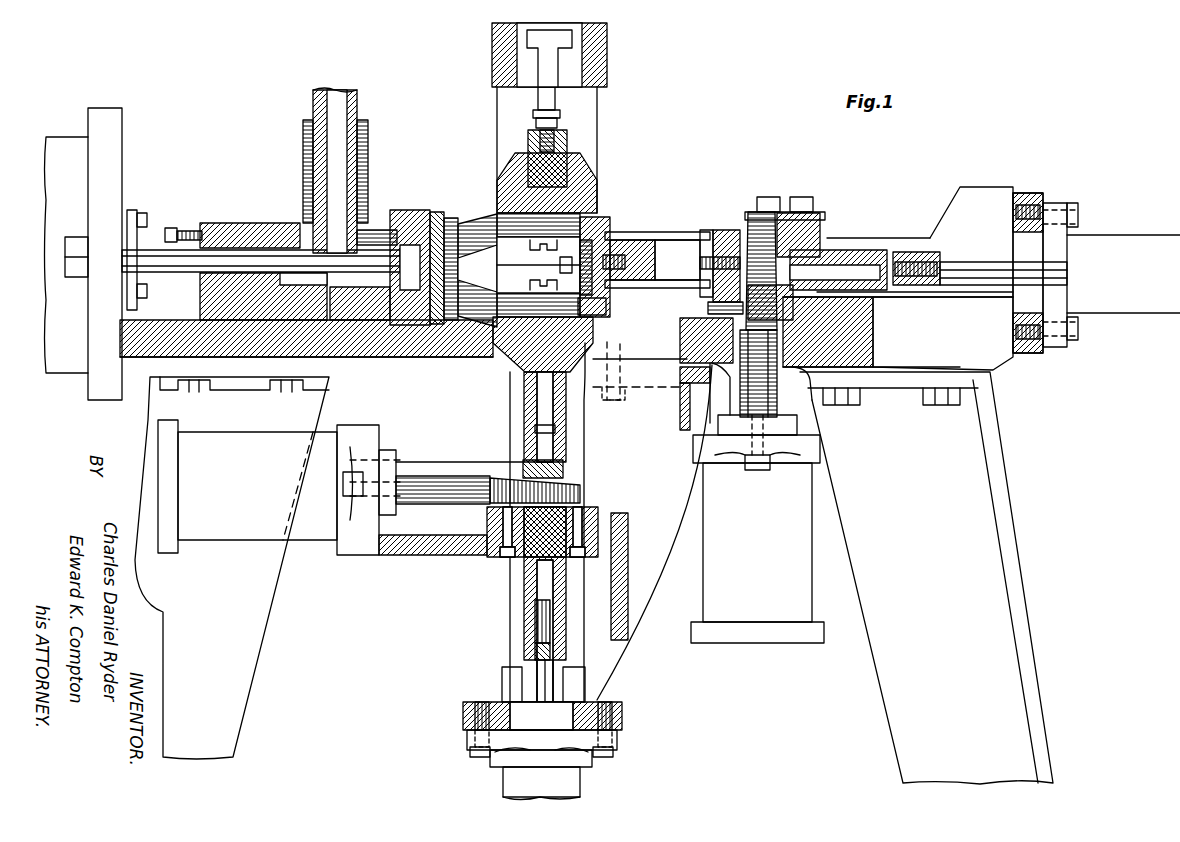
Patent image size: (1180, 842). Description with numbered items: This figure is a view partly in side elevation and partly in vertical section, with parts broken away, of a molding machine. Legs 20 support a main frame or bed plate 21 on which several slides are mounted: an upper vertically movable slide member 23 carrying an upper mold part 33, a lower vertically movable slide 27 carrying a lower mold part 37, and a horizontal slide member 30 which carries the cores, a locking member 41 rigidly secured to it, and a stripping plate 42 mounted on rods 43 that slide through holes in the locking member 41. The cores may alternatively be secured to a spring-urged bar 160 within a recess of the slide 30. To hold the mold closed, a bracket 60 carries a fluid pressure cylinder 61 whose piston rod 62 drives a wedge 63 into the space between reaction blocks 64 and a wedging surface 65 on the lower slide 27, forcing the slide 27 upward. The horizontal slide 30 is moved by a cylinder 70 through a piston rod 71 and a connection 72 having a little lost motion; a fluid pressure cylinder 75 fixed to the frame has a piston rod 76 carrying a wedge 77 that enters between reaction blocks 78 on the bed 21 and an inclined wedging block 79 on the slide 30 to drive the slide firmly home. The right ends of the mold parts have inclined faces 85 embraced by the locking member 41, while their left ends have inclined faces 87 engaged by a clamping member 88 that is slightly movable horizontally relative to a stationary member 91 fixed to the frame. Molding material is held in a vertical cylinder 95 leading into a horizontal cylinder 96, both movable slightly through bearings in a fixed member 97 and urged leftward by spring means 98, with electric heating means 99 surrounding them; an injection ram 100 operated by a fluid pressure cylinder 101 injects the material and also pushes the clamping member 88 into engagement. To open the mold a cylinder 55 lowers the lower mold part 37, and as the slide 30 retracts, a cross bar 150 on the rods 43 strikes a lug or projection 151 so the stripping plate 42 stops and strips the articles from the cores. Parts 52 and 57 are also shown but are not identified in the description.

The legs 20 is at (256, 690).
The main frame or bed plate 21 is at (430, 365).
The upper vertically movable slide member 23 is at (597, 193).
The lower vertically movable slide 27 is at (595, 338).
The horizontal slide member 30 is at (640, 248).
The upper mold part 33 is at (514, 252).
The lower mold part 37 is at (514, 280).
The locking member 41 is at (602, 228).
The stripping plate 42 is at (606, 302).
The rods 43 is at (635, 232).
The adjusting stem 52 is at (555, 100).
The cylinder 55 is at (582, 785).
The spindle screw 57 is at (537, 670).
The bracket 60 is at (433, 555).
The fluid pressure cylinder 61 is at (310, 532).
The piston rod 62 is at (437, 474).
The wedge 63 is at (582, 490).
The reaction blocks 64 is at (557, 572).
The wedging surface 65 is at (565, 470).
The cylinder 70 is at (1103, 245).
The piston rod 71 is at (972, 268).
The connection 72 is at (898, 252).
The fluid pressure cylinder 75 is at (800, 596).
The piston rod 76 is at (772, 400).
The wedge 77 is at (760, 232).
The reaction blocks 78 is at (800, 222).
The inclined wedging block 79 is at (725, 240).
The inclined faces 85 is at (560, 268).
The inclined faces 87 is at (462, 222).
The clamping member 88 is at (442, 252).
The stationary member 91 is at (410, 256).
The vertical cylinder 95 is at (358, 112).
The horizontal cylinder 96 is at (272, 225).
The fixed member 97 is at (200, 298).
The spring means 98 is at (185, 230).
The electric heating means 99 is at (368, 200).
The injection ram 100 is at (148, 248).
The fluid pressure cylinder 101 is at (66, 145).
The cross bar 150 is at (700, 235).
The lug or projection 151 is at (726, 300).
The bar 160 is at (677, 260).